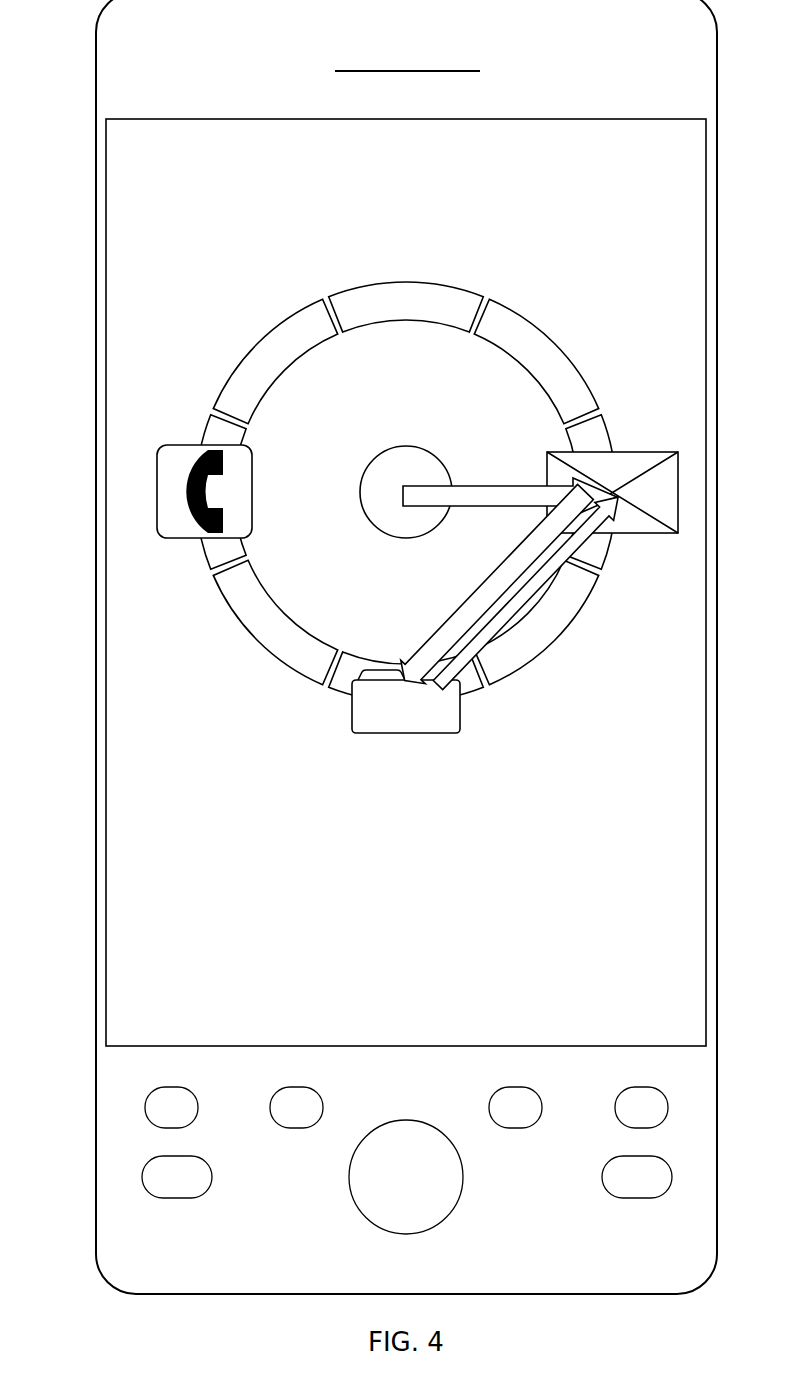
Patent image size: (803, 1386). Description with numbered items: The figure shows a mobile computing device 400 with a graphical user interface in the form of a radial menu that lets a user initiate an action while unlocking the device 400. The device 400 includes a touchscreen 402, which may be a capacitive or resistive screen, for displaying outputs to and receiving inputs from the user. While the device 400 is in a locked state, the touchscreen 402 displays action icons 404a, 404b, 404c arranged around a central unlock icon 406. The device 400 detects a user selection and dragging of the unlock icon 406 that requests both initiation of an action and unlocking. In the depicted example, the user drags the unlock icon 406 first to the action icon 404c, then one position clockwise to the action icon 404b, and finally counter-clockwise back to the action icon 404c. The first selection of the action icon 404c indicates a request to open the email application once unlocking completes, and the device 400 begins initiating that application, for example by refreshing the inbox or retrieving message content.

The mobile computing device 400 is at (96, 53).
The touchscreen 402 is at (192, 119).
The action icon 404a is at (183, 538).
The action icon 404b is at (405, 733).
The action icon 404c is at (618, 452).
The unlock icon 406 is at (373, 460).